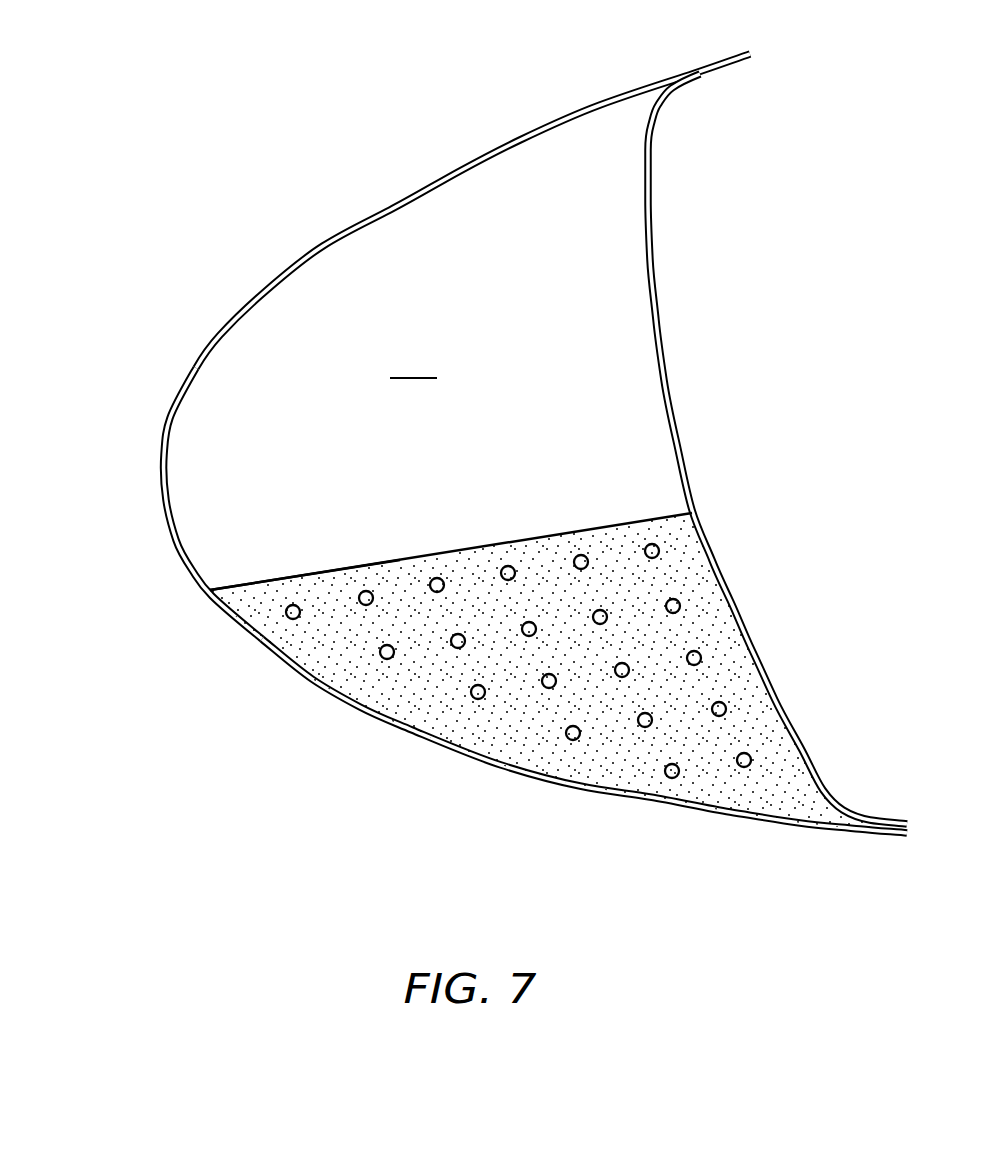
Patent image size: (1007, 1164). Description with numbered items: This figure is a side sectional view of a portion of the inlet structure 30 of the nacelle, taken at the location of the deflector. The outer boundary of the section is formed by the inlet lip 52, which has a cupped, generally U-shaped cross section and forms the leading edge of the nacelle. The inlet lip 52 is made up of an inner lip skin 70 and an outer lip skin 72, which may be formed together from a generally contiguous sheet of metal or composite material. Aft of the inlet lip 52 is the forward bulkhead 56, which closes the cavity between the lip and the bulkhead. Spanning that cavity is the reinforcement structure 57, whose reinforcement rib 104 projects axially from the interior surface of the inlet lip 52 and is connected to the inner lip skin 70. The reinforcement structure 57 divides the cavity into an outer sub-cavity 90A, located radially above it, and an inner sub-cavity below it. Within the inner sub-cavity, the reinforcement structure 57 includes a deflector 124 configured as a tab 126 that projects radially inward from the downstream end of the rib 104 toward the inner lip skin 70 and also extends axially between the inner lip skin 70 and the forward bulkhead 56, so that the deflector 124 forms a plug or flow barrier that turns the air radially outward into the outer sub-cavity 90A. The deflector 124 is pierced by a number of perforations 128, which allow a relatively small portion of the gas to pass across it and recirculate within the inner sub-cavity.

The inlet structure 30 is at (176, 89).
The outer lip skin 72 is at (322, 242).
The inlet lip 52 is at (147, 456).
The inner lip skin 70 is at (502, 778).
The forward bulkhead 56 is at (660, 300).
The reinforcement structure 57 is at (490, 540).
The reinforcement rib 104 is at (328, 567).
The deflector 124 is at (341, 665).
The tab 126 is at (420, 702).
The perforations 128 is at (660, 551).
The outer sub-cavity 90A is at (414, 362).